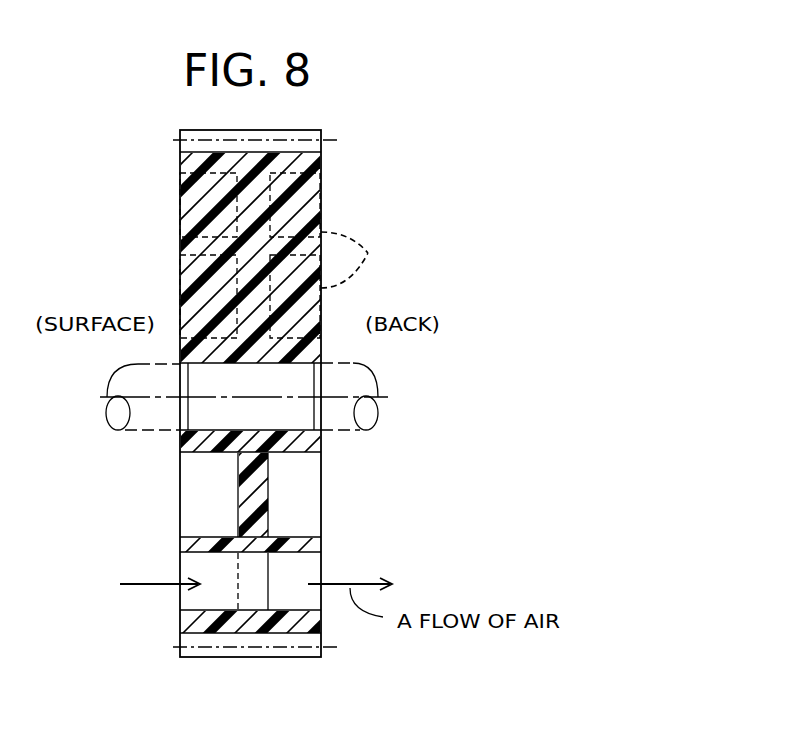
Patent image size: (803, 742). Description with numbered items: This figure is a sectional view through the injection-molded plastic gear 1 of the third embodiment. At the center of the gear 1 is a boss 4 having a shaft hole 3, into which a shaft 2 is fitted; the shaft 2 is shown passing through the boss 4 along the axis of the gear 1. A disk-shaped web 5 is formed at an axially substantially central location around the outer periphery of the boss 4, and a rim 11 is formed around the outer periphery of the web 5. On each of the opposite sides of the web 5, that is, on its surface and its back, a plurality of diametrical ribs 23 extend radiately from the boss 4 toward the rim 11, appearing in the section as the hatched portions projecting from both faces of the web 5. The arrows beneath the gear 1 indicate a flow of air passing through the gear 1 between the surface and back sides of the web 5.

The injection-molded plastic gear 1 is at (322, 190).
The shaft 2 is at (357, 363).
The shaft hole 3 is at (278, 418).
The boss 4 is at (204, 456).
The web 5 is at (368, 253).
The rim 11 is at (250, 633).
The diametrical ribs 23 is at (321, 202).